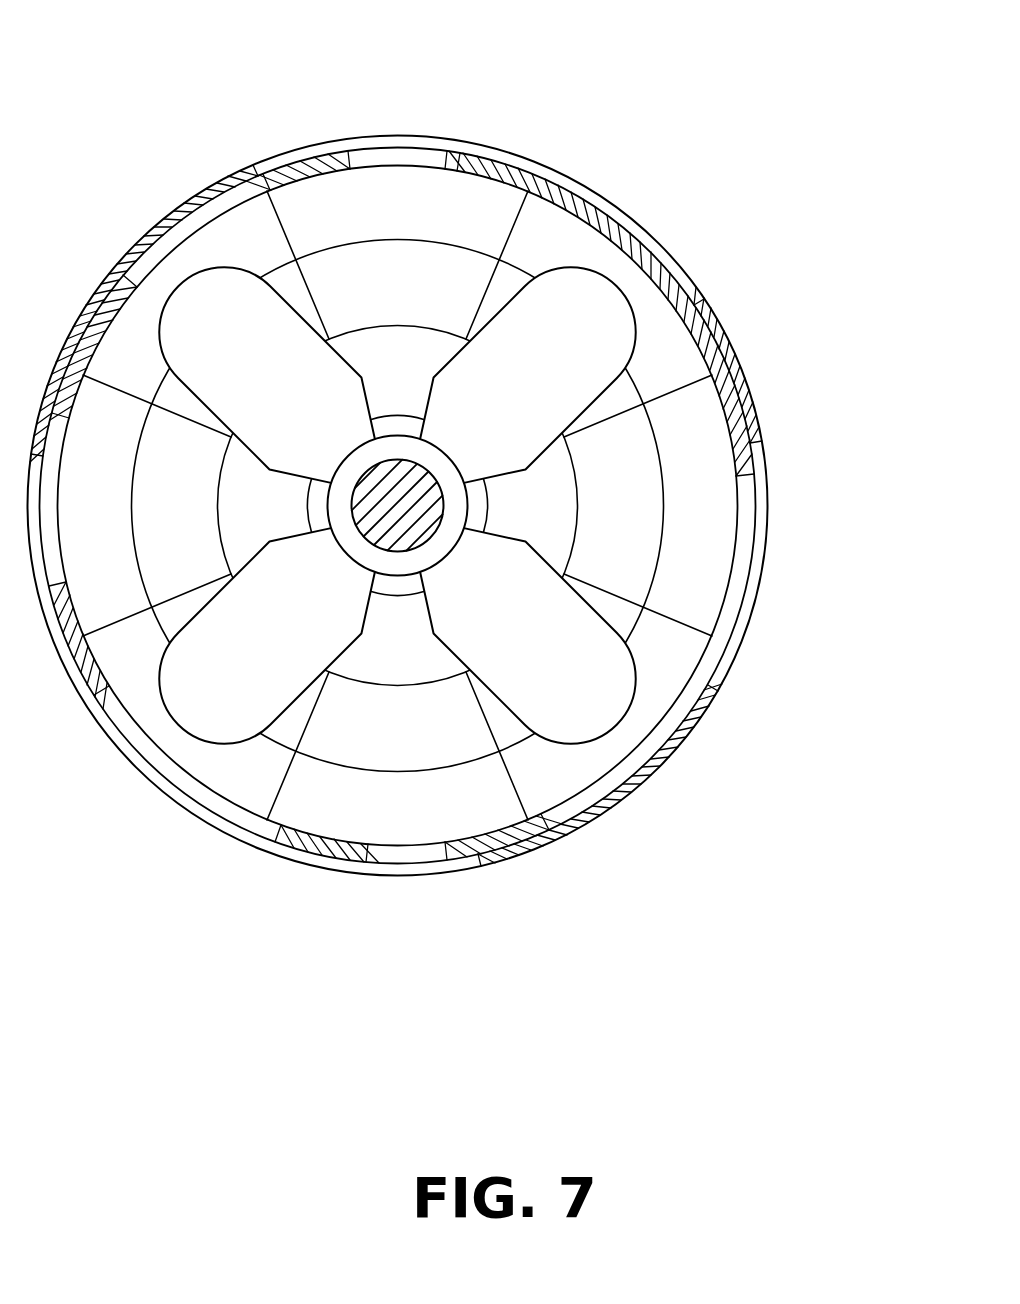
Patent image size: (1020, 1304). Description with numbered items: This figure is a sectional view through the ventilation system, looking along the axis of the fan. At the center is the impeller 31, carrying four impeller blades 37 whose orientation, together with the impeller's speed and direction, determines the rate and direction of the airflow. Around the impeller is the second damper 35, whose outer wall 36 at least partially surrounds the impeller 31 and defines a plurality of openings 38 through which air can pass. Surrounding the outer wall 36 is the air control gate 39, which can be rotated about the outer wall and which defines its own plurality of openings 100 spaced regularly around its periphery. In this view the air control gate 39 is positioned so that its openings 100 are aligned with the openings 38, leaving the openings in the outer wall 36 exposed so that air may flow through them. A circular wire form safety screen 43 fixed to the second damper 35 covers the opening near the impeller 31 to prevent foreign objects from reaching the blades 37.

The openings 100 is at (371, 137).
The wire form safety screen 43 is at (283, 238).
The air control gate 39 is at (565, 162).
The openings 38 is at (665, 265).
The outer wall 36 is at (750, 390).
The second damper 35 is at (760, 430).
The impeller 31 is at (465, 503).
The impeller blades 37 is at (474, 451).